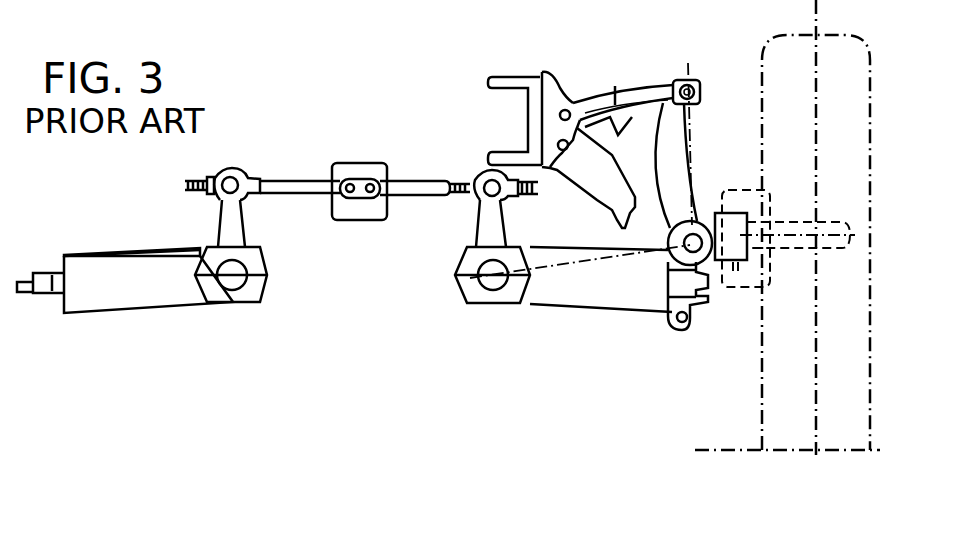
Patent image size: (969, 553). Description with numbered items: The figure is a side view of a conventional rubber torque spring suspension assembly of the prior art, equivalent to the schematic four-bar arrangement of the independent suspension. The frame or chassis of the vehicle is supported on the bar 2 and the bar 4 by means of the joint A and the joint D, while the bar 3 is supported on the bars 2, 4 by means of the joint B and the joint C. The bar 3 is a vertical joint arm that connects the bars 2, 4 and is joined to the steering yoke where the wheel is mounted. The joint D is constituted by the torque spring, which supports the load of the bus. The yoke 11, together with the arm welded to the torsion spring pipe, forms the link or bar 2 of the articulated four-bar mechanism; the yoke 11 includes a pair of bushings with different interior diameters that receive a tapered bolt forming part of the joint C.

The bar 2 is at (570, 275).
The bar 3 is at (694, 154).
The bar 4 is at (615, 87).
The yoke 11 is at (700, 310).
The joint A is at (558, 115).
The joint B is at (688, 80).
The joint C is at (688, 246).
The joint D is at (490, 278).